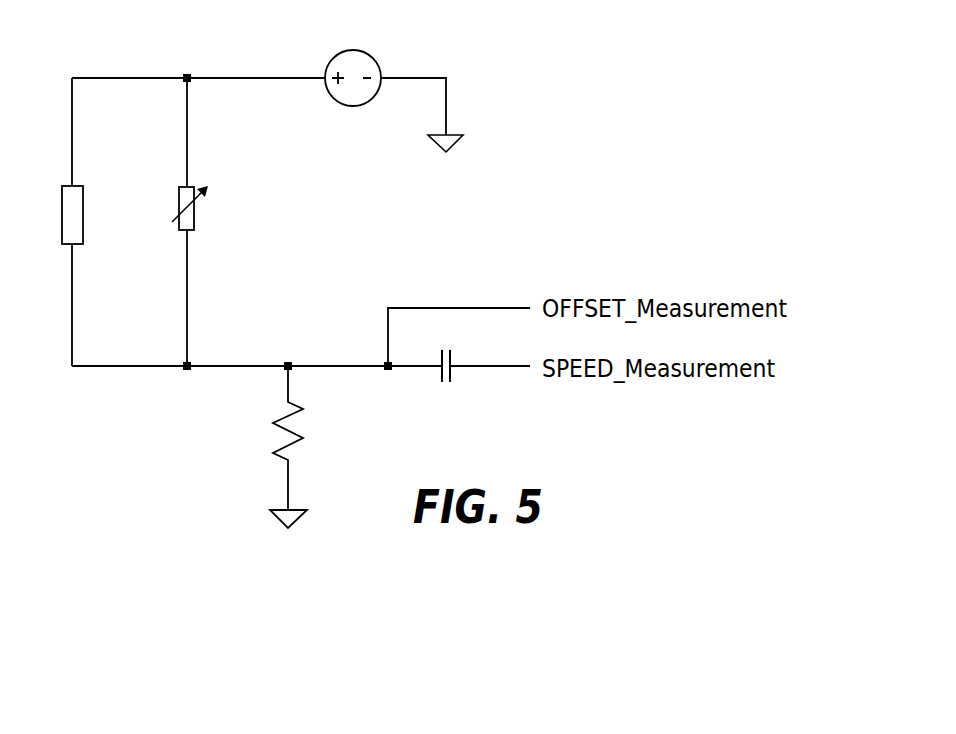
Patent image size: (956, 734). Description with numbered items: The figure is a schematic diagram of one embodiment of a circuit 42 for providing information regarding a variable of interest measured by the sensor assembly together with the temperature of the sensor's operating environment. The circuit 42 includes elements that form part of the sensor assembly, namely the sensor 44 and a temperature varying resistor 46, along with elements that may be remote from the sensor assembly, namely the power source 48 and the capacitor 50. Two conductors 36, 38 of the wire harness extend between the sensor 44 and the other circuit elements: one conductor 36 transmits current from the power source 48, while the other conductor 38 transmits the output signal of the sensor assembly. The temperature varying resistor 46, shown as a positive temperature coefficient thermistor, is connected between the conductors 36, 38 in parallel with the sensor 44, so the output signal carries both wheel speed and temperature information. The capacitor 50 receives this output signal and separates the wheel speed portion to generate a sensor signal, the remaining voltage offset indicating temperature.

The conductor 36 is at (266, 74).
The conductor 38 is at (235, 371).
The circuit 42 is at (574, 191).
The sensor 44 is at (75, 225).
The temperature varying resistor 46 is at (196, 225).
The power source 48 is at (378, 66).
The capacitor 50 is at (454, 370).